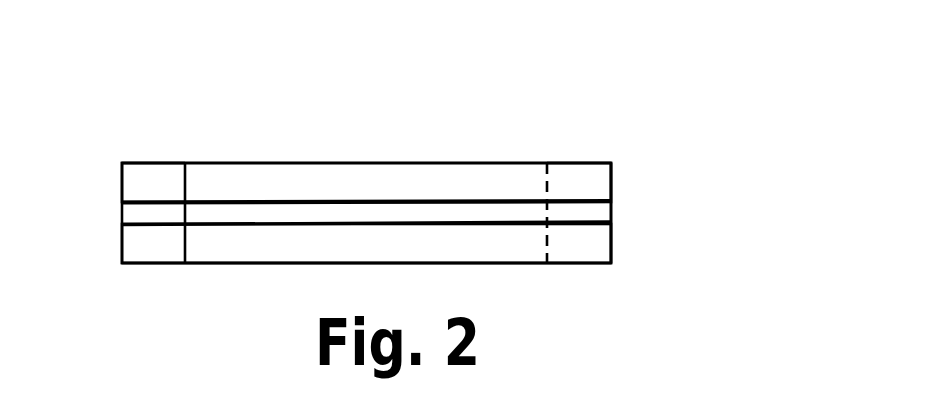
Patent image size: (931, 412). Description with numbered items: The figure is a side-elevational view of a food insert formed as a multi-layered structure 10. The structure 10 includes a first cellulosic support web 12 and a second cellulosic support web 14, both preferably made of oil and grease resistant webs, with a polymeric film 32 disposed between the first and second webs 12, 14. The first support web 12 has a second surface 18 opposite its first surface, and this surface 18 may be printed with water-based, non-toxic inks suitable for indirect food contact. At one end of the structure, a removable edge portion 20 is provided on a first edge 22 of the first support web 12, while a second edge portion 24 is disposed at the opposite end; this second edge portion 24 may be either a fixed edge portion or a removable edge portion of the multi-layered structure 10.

The multi-layered structure 10 is at (652, 166).
The first cellulosic support web 12 is at (258, 245).
The second cellulosic support web 14 is at (342, 185).
The second surface 18 is at (505, 264).
The removable edge portion 20 is at (590, 155).
The first edge 22 is at (612, 245).
The second edge portion 24 is at (153, 153).
The polymeric film 32 is at (153, 214).